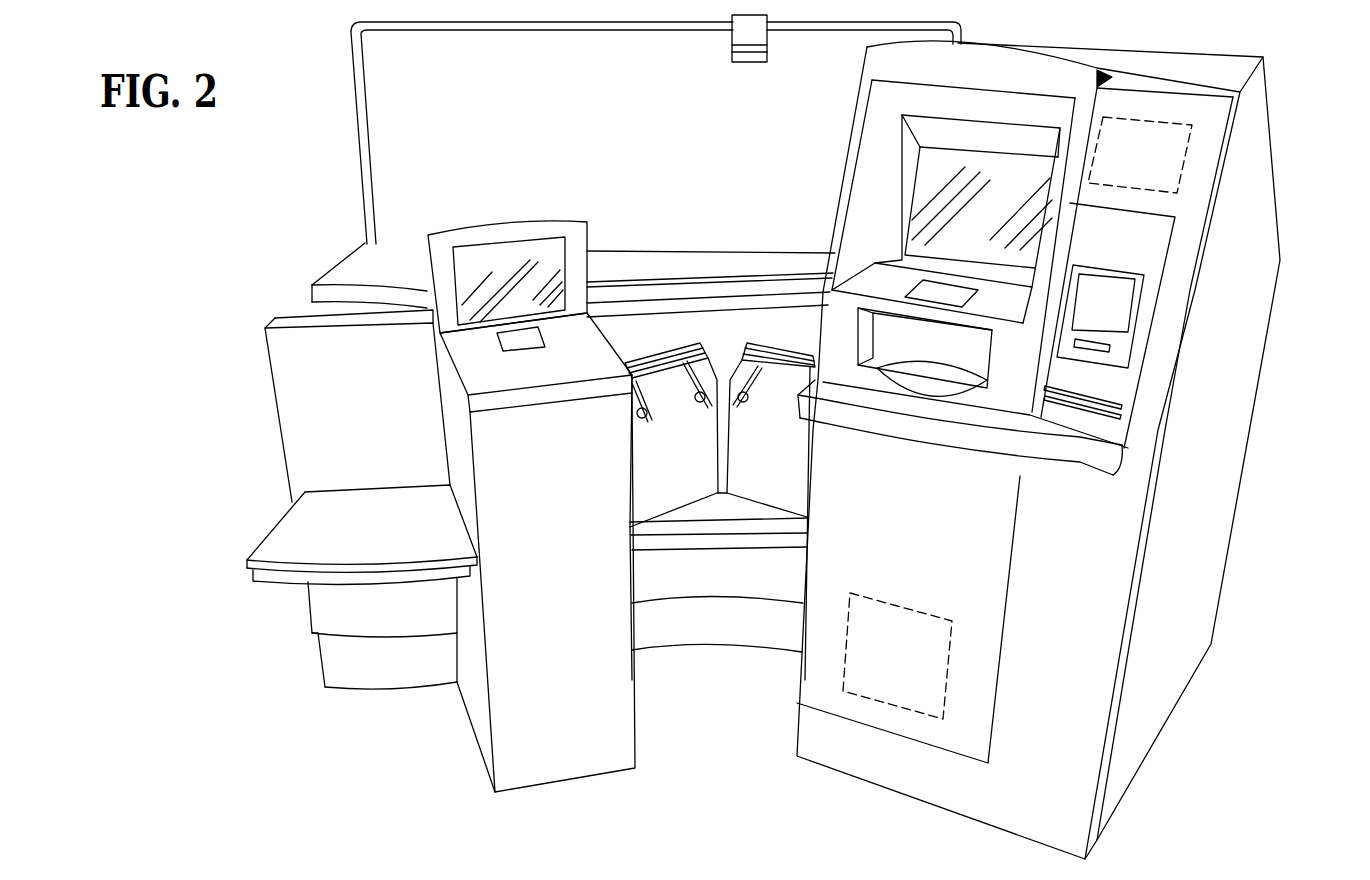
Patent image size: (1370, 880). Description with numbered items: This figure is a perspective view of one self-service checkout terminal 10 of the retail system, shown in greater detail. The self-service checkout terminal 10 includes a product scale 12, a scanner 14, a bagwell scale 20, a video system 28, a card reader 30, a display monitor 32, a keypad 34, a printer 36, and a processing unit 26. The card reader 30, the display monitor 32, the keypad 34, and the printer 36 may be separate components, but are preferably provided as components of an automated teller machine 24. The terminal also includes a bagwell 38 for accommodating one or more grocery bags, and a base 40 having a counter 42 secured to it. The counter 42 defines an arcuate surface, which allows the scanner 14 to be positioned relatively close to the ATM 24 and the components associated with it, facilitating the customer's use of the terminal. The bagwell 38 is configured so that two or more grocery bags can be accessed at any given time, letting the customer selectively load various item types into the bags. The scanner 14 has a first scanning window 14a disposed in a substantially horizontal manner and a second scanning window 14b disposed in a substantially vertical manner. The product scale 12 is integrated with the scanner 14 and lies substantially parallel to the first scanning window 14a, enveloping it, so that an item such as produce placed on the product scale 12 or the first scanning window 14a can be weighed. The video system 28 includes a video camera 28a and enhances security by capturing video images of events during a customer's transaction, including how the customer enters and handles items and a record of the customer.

The self-service checkout terminal 10 is at (201, 226).
The product scale 12 is at (473, 372).
The scanner 14 is at (512, 265).
The first scanning window 14a is at (522, 340).
The second scanning window 14b is at (492, 257).
The bagwell scale 20 is at (757, 511).
The automated teller machine 24 is at (1074, 450).
The processing unit 26 is at (911, 628).
The video system 28 is at (1157, 157).
The video camera 28a is at (751, 52).
The card reader 30 is at (1113, 345).
The display monitor 32 is at (937, 177).
The keypad 34 is at (943, 297).
The printer 36 is at (1122, 406).
The bagwell 38 is at (724, 500).
The base 40 is at (299, 418).
The counter 42 is at (342, 309).